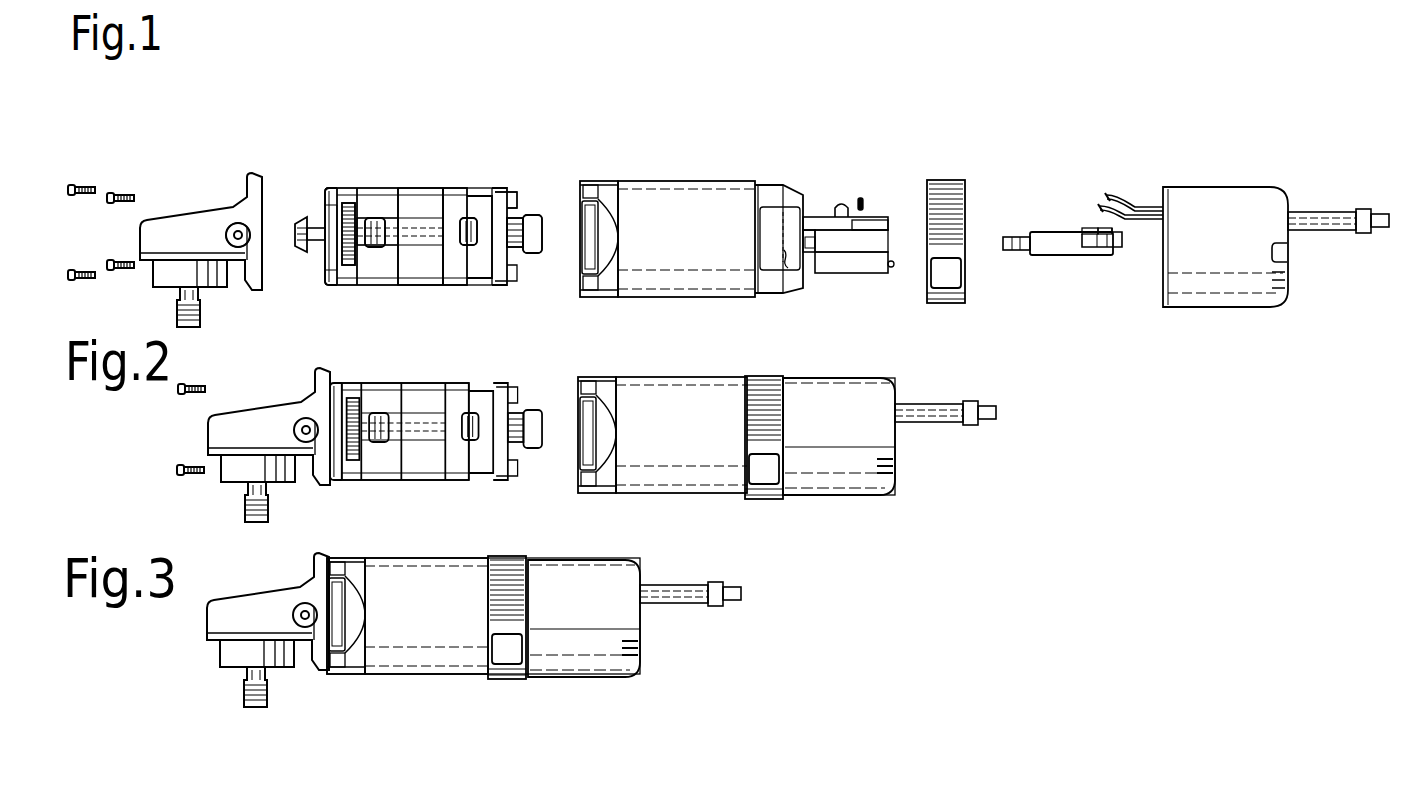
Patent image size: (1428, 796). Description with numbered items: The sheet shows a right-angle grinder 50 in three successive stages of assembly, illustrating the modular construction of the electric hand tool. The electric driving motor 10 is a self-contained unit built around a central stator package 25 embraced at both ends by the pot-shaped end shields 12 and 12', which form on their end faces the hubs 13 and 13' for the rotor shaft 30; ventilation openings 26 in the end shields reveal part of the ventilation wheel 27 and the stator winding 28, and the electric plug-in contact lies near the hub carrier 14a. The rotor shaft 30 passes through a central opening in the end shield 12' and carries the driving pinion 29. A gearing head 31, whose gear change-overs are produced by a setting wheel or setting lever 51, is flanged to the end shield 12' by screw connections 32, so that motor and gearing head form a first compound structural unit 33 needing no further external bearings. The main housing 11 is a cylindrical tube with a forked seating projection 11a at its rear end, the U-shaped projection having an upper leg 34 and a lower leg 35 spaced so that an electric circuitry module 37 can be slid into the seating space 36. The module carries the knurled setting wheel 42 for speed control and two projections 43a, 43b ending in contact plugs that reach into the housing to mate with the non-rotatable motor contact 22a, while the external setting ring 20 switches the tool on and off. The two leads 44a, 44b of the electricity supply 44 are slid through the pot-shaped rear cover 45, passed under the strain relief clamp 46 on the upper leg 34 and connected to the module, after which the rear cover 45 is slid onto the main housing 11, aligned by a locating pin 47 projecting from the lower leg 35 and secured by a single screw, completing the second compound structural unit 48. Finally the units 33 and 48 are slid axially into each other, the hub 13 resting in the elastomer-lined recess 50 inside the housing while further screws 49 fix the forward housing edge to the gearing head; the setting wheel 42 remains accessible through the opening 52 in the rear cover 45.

In FIG. 1, the electric driving motor 10 is at (436, 186).
In FIG. 2, the electric driving motor 10 is at (432, 381).
In FIG. 1, the main housing 11 is at (653, 179).
In FIG. 2, the main housing 11 is at (651, 376).
In FIG. 3, the main housing 11 is at (431, 572).
In FIG. 1, the forked seating projection 11a is at (861, 198).
In FIG. 1, the end shield 12 is at (489, 191).
In FIG. 1, the end shield 12' is at (364, 181).
In FIG. 1, the hub 13 is at (566, 175).
In FIG. 1, the hub 13' is at (301, 184).
In FIG. 1, the hub carrier 14a is at (518, 214).
In FIG. 1, the setting ring 20 is at (944, 200).
In FIG. 2, the setting ring 20 is at (767, 498).
In FIG. 3, the setting ring 20 is at (515, 556).
In FIG. 1, the motor contact 22a is at (520, 268).
In FIG. 1, the stator package 25 is at (412, 197).
In FIG. 1, the ventilation openings 26 is at (351, 281).
In FIG. 1, the ventilation wheel 27 is at (338, 192).
In FIG. 1, the stator winding 28 is at (380, 208).
In FIG. 1, the driving pinion 29 is at (300, 252).
In FIG. 1, the rotor shaft 30 is at (314, 242).
In FIG. 1, the gearing head 31 is at (186, 225).
In FIG. 2, the gearing head 31 is at (261, 430).
In FIG. 3, the gearing head 31 is at (252, 622).
In FIG. 1, the screw connections 32 is at (84, 271).
In FIG. 2, the compound structural unit 33 is at (367, 477).
In FIG. 1, the upper leg 34 is at (814, 219).
In FIG. 1, the lower leg 35 is at (828, 264).
In FIG. 1, the seating space 36 is at (872, 247).
In FIG. 1, the electric circuitry module 37 is at (1046, 248).
In FIG. 1, the knurled setting wheel 42 is at (1124, 248).
In FIG. 1, the projection 43a is at (1000, 236).
In FIG. 1, the projection 43b is at (1105, 231).
In FIG. 1, the electricity supply 44 is at (1375, 210).
In FIG. 1, the lead 44a is at (1108, 203).
In FIG. 1, the lead 44b is at (1117, 192).
In FIG. 1, the rear cover 45 is at (1201, 200).
In FIG. 2, the rear cover 45 is at (866, 396).
In FIG. 3, the rear cover 45 is at (615, 573).
In FIG. 1, the strain relief clamp 46 is at (840, 202).
In FIG. 1, the locating pin 47 is at (894, 267).
In FIG. 2, the second compound structural unit 48 is at (828, 497).
In FIG. 2, the screws 49 is at (178, 396).
In FIG. 1, the right-angle grinder 50 is at (790, 264).
In FIG. 3, the right-angle grinder 50 is at (415, 688).
In FIG. 1, the setting wheel or setting lever 51 is at (232, 226).
In FIG. 1, the opening 52 is at (1290, 257).